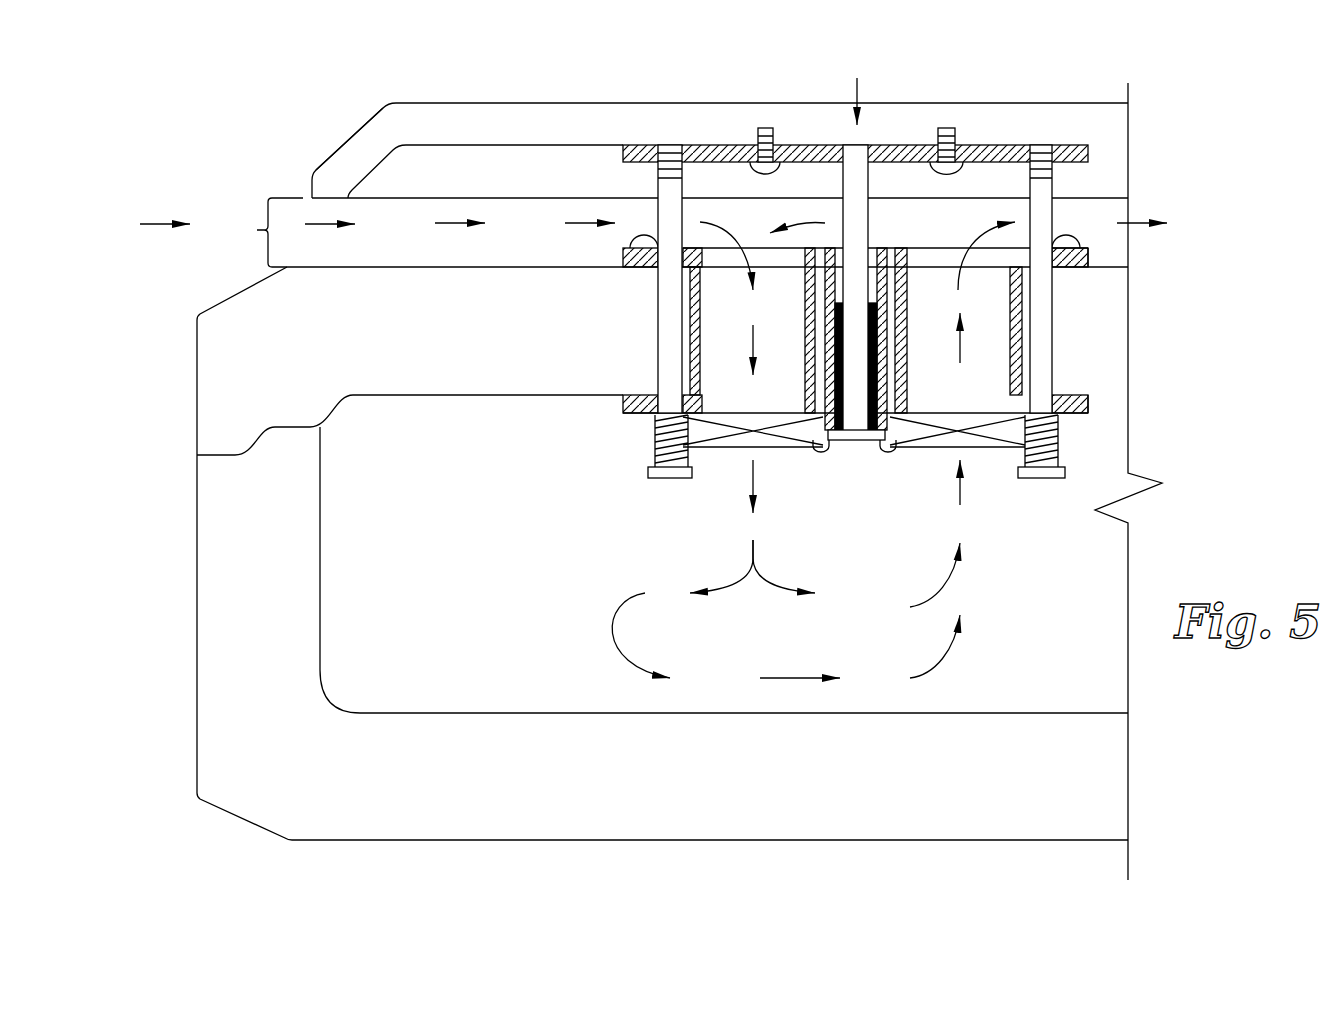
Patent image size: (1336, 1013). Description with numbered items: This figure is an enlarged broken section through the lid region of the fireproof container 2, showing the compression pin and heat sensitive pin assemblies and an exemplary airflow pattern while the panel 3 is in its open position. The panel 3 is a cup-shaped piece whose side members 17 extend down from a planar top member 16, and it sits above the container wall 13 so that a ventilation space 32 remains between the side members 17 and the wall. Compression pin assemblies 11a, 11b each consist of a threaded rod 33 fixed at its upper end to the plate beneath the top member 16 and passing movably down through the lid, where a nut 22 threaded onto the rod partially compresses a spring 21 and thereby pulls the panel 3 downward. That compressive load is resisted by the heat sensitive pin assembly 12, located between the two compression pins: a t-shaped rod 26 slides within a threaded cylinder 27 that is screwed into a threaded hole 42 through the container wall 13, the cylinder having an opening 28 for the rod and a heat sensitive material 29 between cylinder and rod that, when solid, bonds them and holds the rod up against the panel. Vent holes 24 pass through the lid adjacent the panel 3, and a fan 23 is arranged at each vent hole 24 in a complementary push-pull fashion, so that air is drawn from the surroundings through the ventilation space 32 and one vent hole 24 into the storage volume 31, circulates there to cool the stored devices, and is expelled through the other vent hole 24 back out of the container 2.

The container 2 is at (210, 610).
The panel 3 is at (372, 122).
The compression pin assembly 11a is at (663, 180).
The compression pin assembly 11b is at (1052, 178).
The heat sensitive pin assembly 12 is at (870, 180).
The container wall 13 is at (210, 397).
The top member 16 is at (605, 103).
The side members 17 is at (338, 152).
The spring 21 is at (655, 450).
The nut 22 is at (648, 478).
The fan 23 is at (712, 450).
The vent hole 24 is at (855, 324).
The t-shaped rod 26 is at (870, 223).
The threaded cylinder 27 is at (818, 448).
The opening 28 is at (838, 283).
The heat sensitive material 29 is at (892, 448).
The storage volume 31 is at (724, 513).
The ventilation space 32 is at (653, 244).
The threaded rod 33 is at (683, 183).
The threaded hole 42 is at (887, 283).